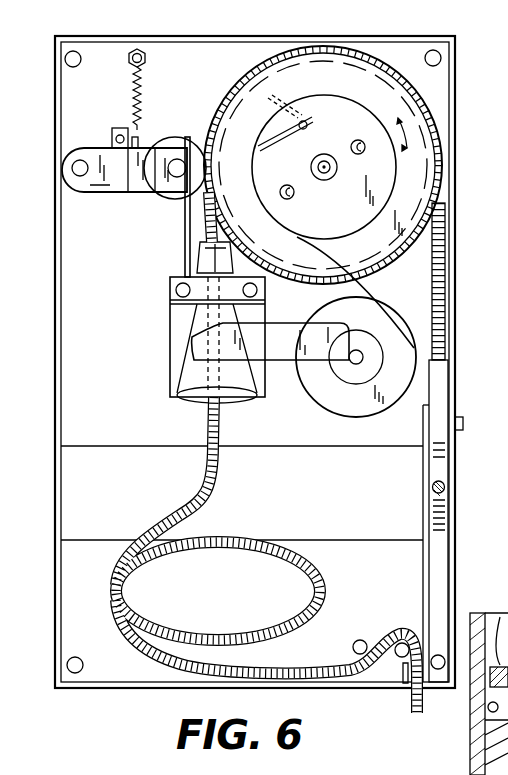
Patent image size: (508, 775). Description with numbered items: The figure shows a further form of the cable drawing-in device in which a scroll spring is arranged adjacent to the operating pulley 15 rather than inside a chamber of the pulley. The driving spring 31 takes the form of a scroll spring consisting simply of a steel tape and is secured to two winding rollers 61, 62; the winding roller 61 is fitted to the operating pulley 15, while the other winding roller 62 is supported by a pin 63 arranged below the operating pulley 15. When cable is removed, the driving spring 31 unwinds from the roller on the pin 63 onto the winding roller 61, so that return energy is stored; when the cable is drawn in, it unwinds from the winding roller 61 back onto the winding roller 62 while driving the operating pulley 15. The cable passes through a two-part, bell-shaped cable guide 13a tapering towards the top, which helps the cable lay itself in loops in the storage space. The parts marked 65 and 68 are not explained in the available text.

The operating pulley 15 is at (423, 156).
The winding roller 61 is at (378, 110).
The pawl lever 65 is at (257, 140).
The driving spring 31 is at (377, 293).
The winding roller 62 is at (380, 357).
The pin 63 is at (363, 354).
The cable guide 13a is at (178, 393).
The housing wall 68 is at (490, 727).